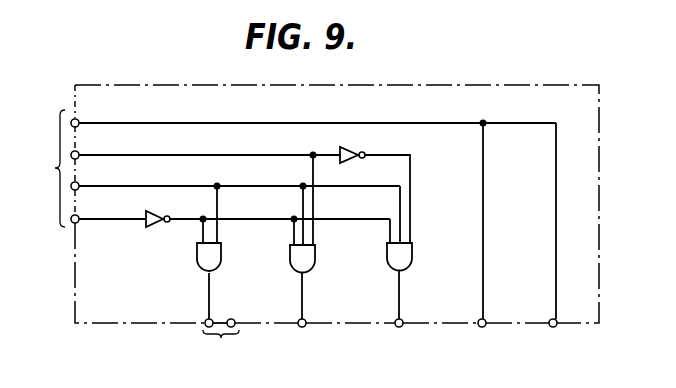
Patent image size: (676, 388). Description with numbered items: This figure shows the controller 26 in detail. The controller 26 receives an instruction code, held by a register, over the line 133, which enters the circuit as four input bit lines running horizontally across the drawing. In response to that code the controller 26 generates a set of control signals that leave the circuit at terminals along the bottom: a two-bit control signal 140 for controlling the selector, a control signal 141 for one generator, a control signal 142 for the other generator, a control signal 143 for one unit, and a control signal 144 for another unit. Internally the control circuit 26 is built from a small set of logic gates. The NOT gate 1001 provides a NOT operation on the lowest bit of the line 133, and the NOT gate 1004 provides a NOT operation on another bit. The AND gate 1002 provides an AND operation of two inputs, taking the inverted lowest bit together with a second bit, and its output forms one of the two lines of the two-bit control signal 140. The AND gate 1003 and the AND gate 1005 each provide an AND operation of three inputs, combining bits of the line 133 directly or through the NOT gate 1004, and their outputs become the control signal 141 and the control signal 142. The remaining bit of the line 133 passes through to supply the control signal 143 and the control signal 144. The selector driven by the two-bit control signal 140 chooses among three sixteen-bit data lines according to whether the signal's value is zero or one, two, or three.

The controller 26 is at (600, 208).
The line 133 is at (76, 165).
The NOT gate 1001 is at (157, 228).
The AND gate 1002 is at (222, 256).
The AND gate 1003 is at (316, 260).
The NOT gate 1004 is at (361, 134).
The AND gate 1005 is at (413, 255).
The 2-bit control signal 140 is at (221, 339).
The control signal 141 is at (302, 328).
The control signal 142 is at (398, 328).
The control signal 143 is at (481, 328).
The control signal 144 is at (556, 328).